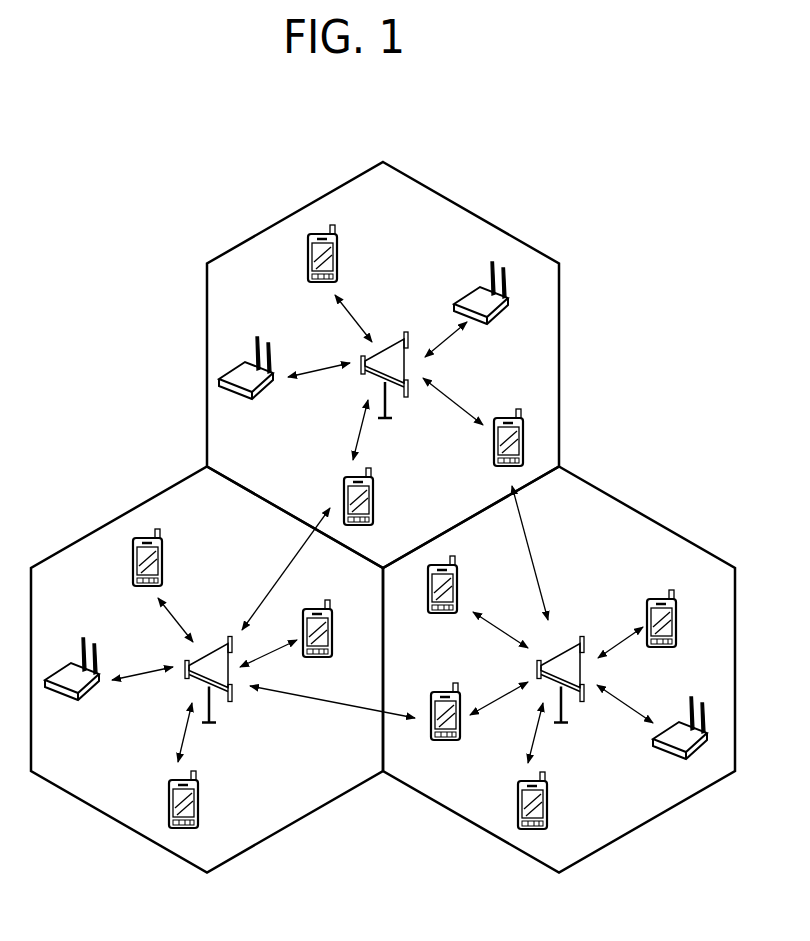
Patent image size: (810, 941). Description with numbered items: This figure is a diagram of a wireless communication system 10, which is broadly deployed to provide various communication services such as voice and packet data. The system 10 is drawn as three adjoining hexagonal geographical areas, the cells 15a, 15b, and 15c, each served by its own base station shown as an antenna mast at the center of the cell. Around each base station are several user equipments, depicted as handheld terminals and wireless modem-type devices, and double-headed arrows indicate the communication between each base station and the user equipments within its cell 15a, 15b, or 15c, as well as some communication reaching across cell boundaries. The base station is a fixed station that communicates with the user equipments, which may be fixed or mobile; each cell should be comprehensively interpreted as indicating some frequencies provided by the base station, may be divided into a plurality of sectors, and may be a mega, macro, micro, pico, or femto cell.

The wireless communication system 10 is at (383, 517).
The cell 15a is at (559, 353).
The cell 15b is at (668, 529).
The cell 15c is at (97, 530).